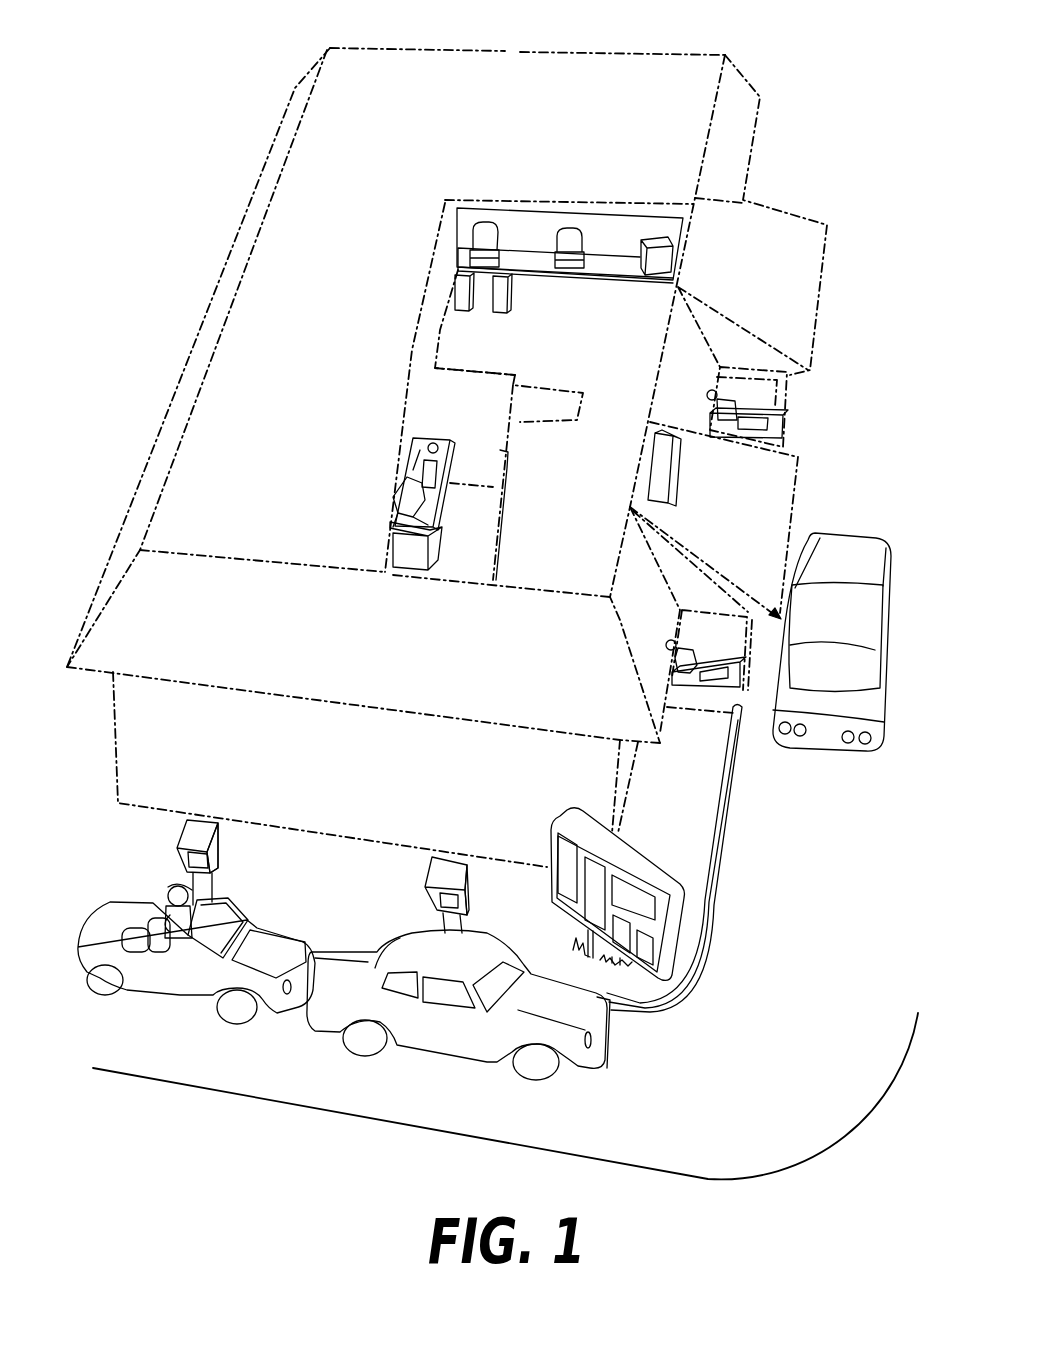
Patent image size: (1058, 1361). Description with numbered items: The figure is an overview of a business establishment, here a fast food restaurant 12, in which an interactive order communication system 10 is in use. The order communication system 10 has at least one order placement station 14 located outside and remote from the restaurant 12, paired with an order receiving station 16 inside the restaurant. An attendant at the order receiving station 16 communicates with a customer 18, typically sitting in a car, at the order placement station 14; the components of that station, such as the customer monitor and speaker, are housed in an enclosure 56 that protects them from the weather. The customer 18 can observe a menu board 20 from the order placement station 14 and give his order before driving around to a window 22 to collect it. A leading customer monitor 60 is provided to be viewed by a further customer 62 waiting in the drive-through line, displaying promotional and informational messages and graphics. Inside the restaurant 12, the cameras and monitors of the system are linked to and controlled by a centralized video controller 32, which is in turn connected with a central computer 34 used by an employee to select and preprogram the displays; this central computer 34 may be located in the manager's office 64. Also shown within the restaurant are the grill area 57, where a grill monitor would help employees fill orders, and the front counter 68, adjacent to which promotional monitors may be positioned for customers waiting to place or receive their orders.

The order communication system 10 is at (219, 176).
The fast food restaurant 12 is at (513, 50).
The order placement station 14 is at (435, 873).
The order receiving station 16 is at (792, 412).
The customer 18 is at (508, 972).
The menu board 20 is at (648, 875).
The window 22 is at (739, 586).
The centralized video controller 32 is at (660, 473).
The central computer 34 is at (397, 490).
The enclosure 56 is at (215, 850).
The grill area 57 is at (482, 360).
The leading customer monitor 60 is at (193, 835).
The customer 62 is at (183, 993).
The manager's office 64 is at (437, 395).
The front counter 68 is at (608, 263).